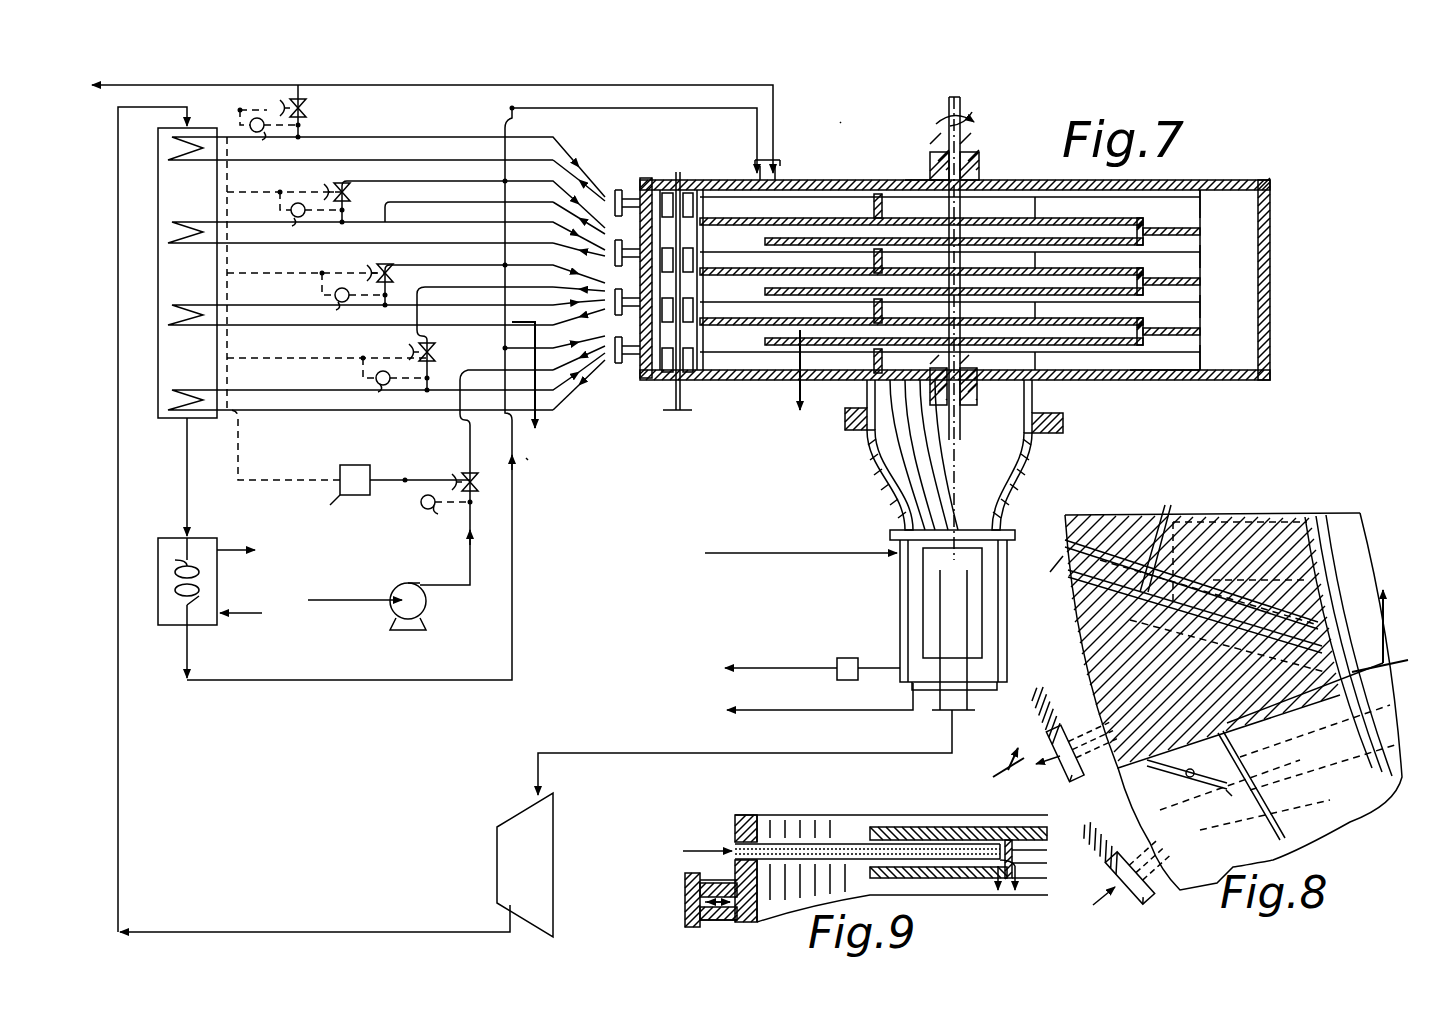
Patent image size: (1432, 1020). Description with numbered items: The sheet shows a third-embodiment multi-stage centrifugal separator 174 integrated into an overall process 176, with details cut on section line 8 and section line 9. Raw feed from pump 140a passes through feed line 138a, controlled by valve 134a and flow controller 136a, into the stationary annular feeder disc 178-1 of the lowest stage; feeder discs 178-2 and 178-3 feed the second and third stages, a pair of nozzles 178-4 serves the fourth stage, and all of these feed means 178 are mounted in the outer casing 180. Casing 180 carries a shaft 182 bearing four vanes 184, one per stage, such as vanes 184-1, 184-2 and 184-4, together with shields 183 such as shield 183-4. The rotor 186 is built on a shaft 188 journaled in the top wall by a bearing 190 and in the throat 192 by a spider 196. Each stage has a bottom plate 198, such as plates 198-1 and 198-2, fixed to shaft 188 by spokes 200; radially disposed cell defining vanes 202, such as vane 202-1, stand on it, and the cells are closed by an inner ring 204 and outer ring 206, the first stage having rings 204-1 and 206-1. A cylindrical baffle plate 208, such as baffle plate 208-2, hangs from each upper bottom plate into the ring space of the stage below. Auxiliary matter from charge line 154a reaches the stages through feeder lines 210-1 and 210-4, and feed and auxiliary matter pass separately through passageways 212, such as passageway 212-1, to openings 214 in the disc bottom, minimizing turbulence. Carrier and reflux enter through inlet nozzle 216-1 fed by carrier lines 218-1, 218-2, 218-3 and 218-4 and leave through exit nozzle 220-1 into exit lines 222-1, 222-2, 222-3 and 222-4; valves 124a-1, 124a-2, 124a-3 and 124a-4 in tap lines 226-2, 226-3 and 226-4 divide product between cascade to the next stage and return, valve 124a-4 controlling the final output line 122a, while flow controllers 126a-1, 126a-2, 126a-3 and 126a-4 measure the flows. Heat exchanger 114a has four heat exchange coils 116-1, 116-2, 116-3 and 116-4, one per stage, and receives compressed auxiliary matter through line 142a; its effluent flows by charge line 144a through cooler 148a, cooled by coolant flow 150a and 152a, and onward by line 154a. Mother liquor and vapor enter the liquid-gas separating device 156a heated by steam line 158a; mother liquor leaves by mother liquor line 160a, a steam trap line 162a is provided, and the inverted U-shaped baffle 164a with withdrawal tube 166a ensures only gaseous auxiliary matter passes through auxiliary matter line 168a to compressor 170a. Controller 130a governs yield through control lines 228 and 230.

In FIG. 7, the section line 8— 8 is at (660, 389).
In FIG. 8, the section line 9— 9 is at (1199, 670).
In FIG. 7, the heat exchanger 114a is at (174, 424).
In FIG. 7, the heat exchange coil 116-1 is at (168, 372).
In FIG. 7, the heat exchange coil 116-2 is at (166, 327).
In FIG. 7, the heat exchange coil 116-3 is at (166, 245).
In FIG. 7, the heat exchange coil 116-4 is at (166, 162).
In FIG. 7, the final output line 122a is at (216, 86).
In FIG. 7, the valve 124a-1 is at (440, 354).
In FIG. 7, the valve 124a-2 is at (393, 270).
In FIG. 7, the valve 124a-3 is at (352, 188).
In FIG. 7, the valve 124a-4 is at (307, 94).
In FIG. 7, the flow controller 126a-1 is at (397, 358).
In FIG. 7, the flow controller 126a-2 is at (347, 273).
In FIG. 7, the flow controller 126a-3 is at (307, 190).
In FIG. 7, the flow controller 126a-4 is at (264, 106).
In FIG. 7, the controller 130a is at (358, 454).
In FIG. 7, the valve 134a is at (461, 461).
In FIG. 7, the flow controller 136a is at (418, 496).
In FIG. 7, the feed line 138a is at (468, 550).
In FIG. 8, the feed line 138a is at (1088, 602).
In FIG. 9, the feed line 138a is at (722, 848).
In FIG. 7, the pump 140a is at (398, 578).
In FIG. 7, the compressed auxiliary matter line 142a is at (292, 930).
In FIG. 7, the charge line 144a is at (186, 484).
In FIG. 7, the cooler 148a is at (178, 628).
In FIG. 7, the coolant flow arrow 150a is at (230, 614).
In FIG. 7, the coolant flow arrow 152a is at (228, 552).
In FIG. 7, the charge line 154a is at (298, 680).
In FIG. 7, the liquid-gas separating device 156a is at (897, 572).
In FIG. 7, the steam line 158a is at (827, 550).
In FIG. 7, the mother liquor line 160a is at (802, 708).
In FIG. 7, the steam trap line 162a is at (806, 664).
In FIG. 7, the inverted U-shaped baffle 164a is at (922, 604).
In FIG. 7, the withdrawal tube 166a is at (938, 656).
In FIG. 7, the auxiliary matter line 168a is at (844, 752).
In FIG. 7, the compressor 170a is at (514, 806).
In FIG. 7, the centrifugal separator 174 is at (840, 122).
In FIG. 7, the overall system or process 176 is at (528, 460).
In FIG. 8, the feed means 178 is at (1156, 516).
In FIG. 9, the feed means 178 is at (792, 814).
In FIG. 7, the stationary annular feeder disc 178-1 is at (620, 360).
In FIG. 7, the feeder disc 178-2 is at (624, 296).
In FIG. 7, the feeder disc 178-3 is at (658, 173).
In FIG. 7, the feed nozzles 178-4 is at (782, 167).
In FIG. 7, the outer casing 180 is at (1268, 322).
In FIG. 7, the shaft 182 is at (682, 404).
In FIG. 8, the shaft 182 is at (1174, 784).
In FIG. 8, the shields 183 is at (1276, 830).
In FIG. 7, the shield 183-4 is at (691, 176).
In FIG. 7, the vanes 184 is at (940, 416).
In FIG. 8, the vanes 184 is at (1228, 794).
In FIG. 7, the vane 184-1 is at (703, 349).
In FIG. 7, the vane 184-2 is at (700, 300).
In FIG. 7, the vane 184-4 is at (672, 184).
In FIG. 7, the rotor 186 is at (922, 178).
In FIG. 7, the shaft 188 is at (946, 104).
In FIG. 7, the bearing 190 is at (982, 160).
In FIG. 7, the throat 192 is at (1040, 402).
In FIG. 7, the spider 196 is at (878, 416).
In FIG. 9, the bottom plate 198 is at (954, 826).
In FIG. 7, the bottom plate 198-1 is at (1134, 378).
In FIG. 7, the bottom plate 198-2 is at (1192, 314).
In FIG. 7, the spokes 200 is at (974, 394).
In FIG. 8, the cell defining vanes 202 is at (1346, 718).
In FIG. 7, the cell defining vane 202-1 is at (1206, 376).
In FIG. 8, the inner ring 204 is at (1342, 518).
In FIG. 9, the inner ring 204 is at (1050, 870).
In FIG. 7, the inner ring 204-1 is at (1092, 344).
In FIG. 8, the outer ring 206 is at (1326, 798).
In FIG. 9, the outer ring 206 is at (870, 874).
In FIG. 7, the outer ring 206-1 is at (1262, 336).
In FIG. 8, the cylindrical baffle plate 208 is at (1307, 516).
In FIG. 9, the cylindrical baffle plate 208 is at (1040, 850).
In FIG. 7, the cylindrical baffle plate 208-2 is at (1142, 340).
In FIG. 7, the feeder line 210-1 is at (568, 340).
In FIG. 8, the feeder line 210-1 is at (1068, 540).
In FIG. 7, the feeder line 210-4 is at (554, 108).
In FIG. 9, the passageways 212 is at (810, 850).
In FIG. 8, the passageway 212-1 is at (1165, 509).
In FIG. 9, the openings 214 is at (993, 878).
In FIG. 8, the inlet nozzle 216-1 is at (1162, 898).
In FIG. 7, the carrier line 218-1 is at (571, 398).
In FIG. 8, the carrier line 218-1 is at (1105, 906).
In FIG. 7, the carrier line 218-2 is at (438, 325).
In FIG. 7, the carrier line 218-3 is at (422, 243).
In FIG. 7, the carrier line 218-4 is at (360, 160).
In FIG. 8, the exit nozzle 220-1 is at (1098, 772).
In FIG. 7, the exit line 222-1 is at (340, 388).
In FIG. 8, the exit line 222-1 is at (1042, 736).
In FIG. 7, the exit line 222-2 is at (433, 299).
In FIG. 7, the exit line 222-3 is at (395, 222).
In FIG. 7, the exit line 222-4 is at (370, 136).
In FIG. 7, the tap line 226-2 is at (422, 322).
In FIG. 7, the tap line 226-3 is at (440, 192).
In FIG. 7, the tap line 226-4 is at (416, 86).
In FIG. 7, the control line 228 is at (390, 478).
In FIG. 7, the control line 230 is at (238, 452).